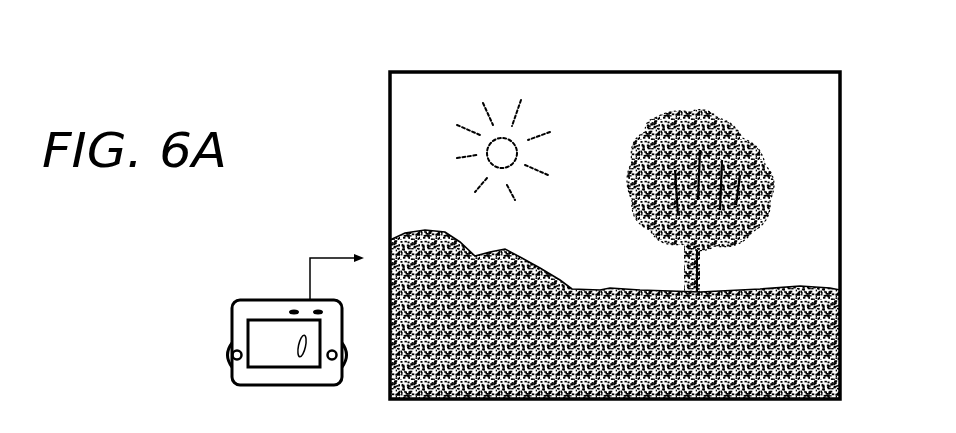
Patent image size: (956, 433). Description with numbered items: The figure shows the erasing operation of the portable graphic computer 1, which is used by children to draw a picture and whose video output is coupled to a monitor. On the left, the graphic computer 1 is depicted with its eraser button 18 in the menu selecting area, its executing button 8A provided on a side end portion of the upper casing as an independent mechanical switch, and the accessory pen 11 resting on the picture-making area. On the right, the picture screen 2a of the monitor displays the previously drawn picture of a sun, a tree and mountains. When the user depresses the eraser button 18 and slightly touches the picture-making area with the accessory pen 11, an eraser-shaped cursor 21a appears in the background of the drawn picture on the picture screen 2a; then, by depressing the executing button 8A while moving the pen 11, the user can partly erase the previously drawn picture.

The picture screen 2a is at (675, 72).
The eraser-shaped cursor 21a is at (729, 121).
The graphic computer 1 is at (232, 318).
The eraser button 18 is at (293, 308).
The executing button 8A is at (229, 360).
The accessory pen 11 is at (300, 354).